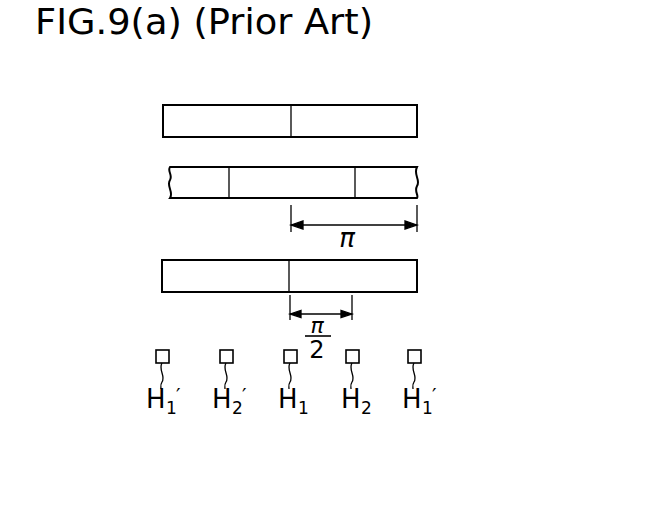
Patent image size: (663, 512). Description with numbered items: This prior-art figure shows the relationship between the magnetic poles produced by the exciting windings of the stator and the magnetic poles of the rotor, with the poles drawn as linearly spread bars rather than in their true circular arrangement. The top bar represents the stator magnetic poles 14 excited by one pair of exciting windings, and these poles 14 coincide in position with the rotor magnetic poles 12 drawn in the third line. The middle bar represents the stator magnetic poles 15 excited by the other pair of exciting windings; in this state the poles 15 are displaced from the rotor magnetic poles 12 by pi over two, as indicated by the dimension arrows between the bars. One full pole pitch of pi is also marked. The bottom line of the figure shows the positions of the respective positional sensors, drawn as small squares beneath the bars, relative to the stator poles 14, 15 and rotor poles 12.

The magnetic pole of the stator 14 is at (417, 121).
The magnetic pole of the stator 15 is at (417, 183).
The magnetic pole of the rotor 12 is at (417, 275).